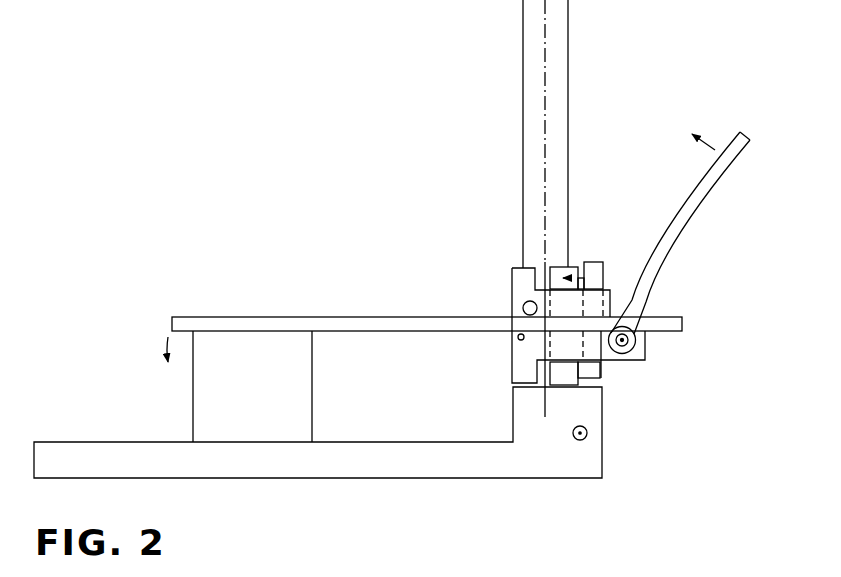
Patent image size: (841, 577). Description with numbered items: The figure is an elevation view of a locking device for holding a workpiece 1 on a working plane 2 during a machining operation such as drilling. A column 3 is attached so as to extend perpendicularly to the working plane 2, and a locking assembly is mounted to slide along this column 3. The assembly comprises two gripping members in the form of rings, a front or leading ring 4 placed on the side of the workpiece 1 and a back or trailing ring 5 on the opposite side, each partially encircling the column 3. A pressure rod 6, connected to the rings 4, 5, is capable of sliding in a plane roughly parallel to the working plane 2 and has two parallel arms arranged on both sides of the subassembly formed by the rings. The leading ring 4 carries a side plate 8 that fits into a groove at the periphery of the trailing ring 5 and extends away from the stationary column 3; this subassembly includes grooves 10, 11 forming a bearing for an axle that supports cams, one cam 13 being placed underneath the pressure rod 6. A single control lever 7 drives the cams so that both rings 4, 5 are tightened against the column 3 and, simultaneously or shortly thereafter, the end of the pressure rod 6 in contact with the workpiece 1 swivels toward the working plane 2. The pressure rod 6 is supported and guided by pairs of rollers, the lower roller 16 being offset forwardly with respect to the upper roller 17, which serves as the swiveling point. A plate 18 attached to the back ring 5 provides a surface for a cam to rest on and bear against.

The workpiece 1 is at (207, 402).
The working plane 2 is at (82, 440).
The column 3 is at (520, 66).
The front or leading ring 4 is at (510, 283).
The back or trailing ring 5 is at (561, 266).
The pressure rod 6 is at (259, 313).
The control lever 7 is at (690, 181).
The side plate 8 is at (608, 357).
The groove 10 is at (618, 297).
The groove 11 is at (581, 283).
The cam 13 is at (635, 353).
The lower roller 16 is at (518, 344).
The upper roller 17 is at (521, 304).
The plate 18 is at (594, 259).